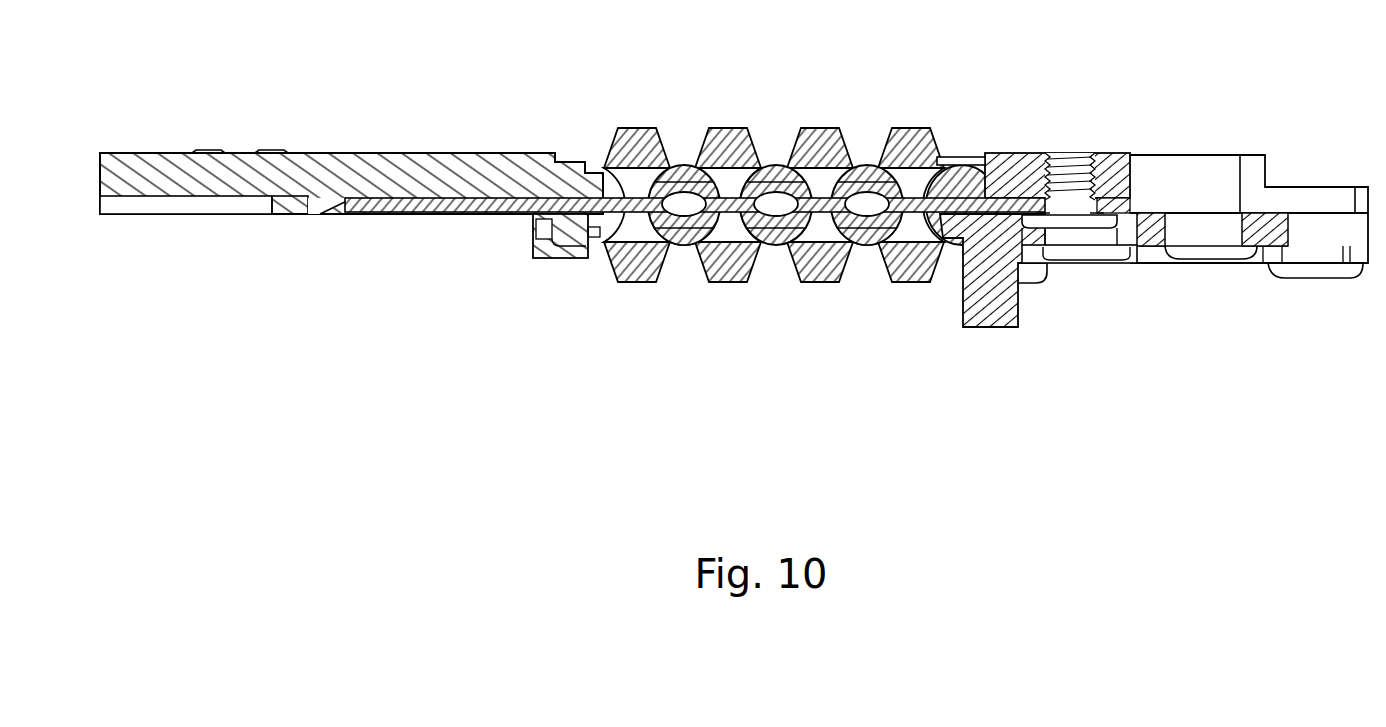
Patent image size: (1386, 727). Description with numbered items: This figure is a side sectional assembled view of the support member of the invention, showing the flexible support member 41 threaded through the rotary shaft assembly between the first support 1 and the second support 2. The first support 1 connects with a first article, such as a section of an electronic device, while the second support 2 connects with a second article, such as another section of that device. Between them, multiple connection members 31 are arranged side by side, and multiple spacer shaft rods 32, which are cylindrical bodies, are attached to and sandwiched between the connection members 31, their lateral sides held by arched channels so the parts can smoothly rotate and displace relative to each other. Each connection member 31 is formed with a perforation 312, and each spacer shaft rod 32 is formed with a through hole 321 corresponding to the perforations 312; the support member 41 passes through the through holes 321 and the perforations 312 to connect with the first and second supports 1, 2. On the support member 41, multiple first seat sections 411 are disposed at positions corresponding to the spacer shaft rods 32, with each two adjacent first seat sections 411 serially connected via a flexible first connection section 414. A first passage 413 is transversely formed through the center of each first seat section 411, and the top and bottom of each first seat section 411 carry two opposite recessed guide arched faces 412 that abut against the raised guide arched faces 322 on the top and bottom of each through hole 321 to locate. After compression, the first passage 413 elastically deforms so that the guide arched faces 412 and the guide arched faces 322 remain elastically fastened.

The first support 1 is at (352, 158).
The flexible support member 41 is at (470, 197).
The first seat section 411 is at (681, 245).
The guide arched face 412 is at (690, 178).
The first passage 413 is at (634, 128).
The flexible first connection section 414 is at (741, 247).
The second support 2 is at (1015, 165).
The connection member 31 is at (913, 182).
The perforation 312 is at (900, 128).
The through hole 321 is at (908, 284).
The guide arched face 322 is at (875, 248).
The spacer shaft rod 32 is at (862, 245).